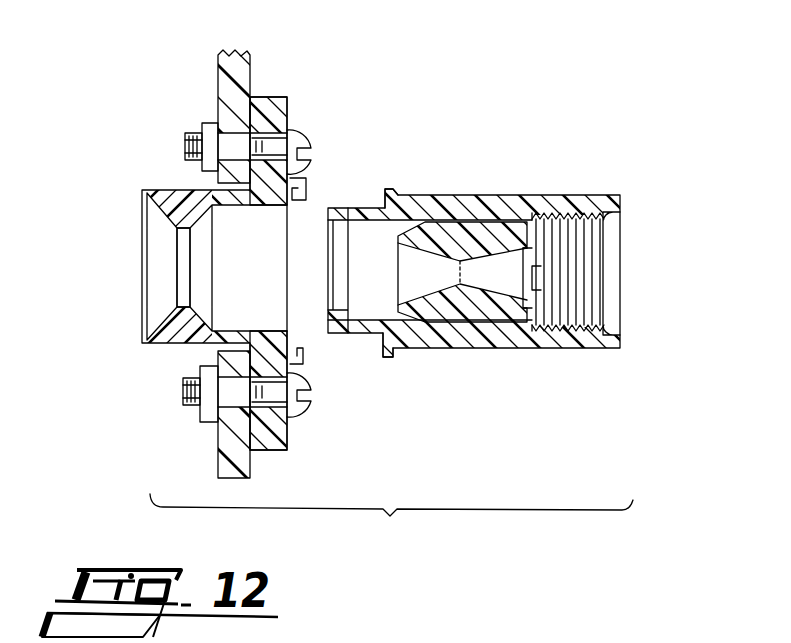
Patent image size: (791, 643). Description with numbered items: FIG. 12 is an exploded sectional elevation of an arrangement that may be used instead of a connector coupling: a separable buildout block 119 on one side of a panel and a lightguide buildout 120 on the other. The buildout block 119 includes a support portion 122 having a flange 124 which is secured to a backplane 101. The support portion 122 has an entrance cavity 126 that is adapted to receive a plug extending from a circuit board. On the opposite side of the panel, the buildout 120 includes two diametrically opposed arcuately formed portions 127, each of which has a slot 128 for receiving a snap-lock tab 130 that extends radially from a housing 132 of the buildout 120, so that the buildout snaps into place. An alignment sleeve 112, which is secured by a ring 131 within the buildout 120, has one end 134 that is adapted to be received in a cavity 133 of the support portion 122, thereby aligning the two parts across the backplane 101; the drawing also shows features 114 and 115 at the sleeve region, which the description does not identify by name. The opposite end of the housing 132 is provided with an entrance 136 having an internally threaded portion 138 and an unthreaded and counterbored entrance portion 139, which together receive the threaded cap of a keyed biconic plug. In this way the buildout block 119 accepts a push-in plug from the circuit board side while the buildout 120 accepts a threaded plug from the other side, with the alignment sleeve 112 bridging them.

The backplane 101 is at (238, 73).
The alignment sleeve 112 is at (452, 237).
The insert shoulder 114 is at (540, 235).
The retaining clip 115 is at (541, 293).
The buildout block 119 is at (142, 365).
The lightguide buildout 120 is at (423, 128).
The support portion 122 is at (158, 190).
The flange 124 is at (275, 102).
The entrance cavity 126 is at (154, 266).
The arcuately formed portions 127 is at (310, 172).
The slot 128 is at (306, 198).
The snap-lock tab 130 is at (395, 188).
The ring 131 is at (343, 298).
The housing 132 is at (493, 337).
The cavity 133 is at (272, 297).
The end 134 is at (357, 323).
The entrance 136 is at (622, 270).
The internally threaded portion 138 is at (575, 220).
The unthreaded and counterbored entrance portion 139 is at (623, 226).